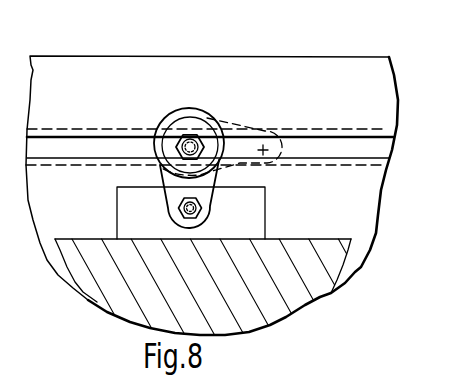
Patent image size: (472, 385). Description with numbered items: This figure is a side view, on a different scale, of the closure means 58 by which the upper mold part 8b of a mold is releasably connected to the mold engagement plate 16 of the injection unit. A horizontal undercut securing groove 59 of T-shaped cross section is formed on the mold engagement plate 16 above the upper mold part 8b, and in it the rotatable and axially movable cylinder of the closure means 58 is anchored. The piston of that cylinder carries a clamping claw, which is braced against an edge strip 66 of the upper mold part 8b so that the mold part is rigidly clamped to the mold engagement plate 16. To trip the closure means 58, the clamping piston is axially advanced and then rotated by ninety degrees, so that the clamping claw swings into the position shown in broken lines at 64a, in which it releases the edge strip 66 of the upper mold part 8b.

The mold engagement plate 16 is at (378, 67).
The closure means 58 is at (199, 86).
The undercut securing groove 59 is at (376, 153).
The released position of the clamping claw 64a is at (240, 127).
The edge strip 66 is at (251, 217).
The upper mold part 8b is at (296, 293).